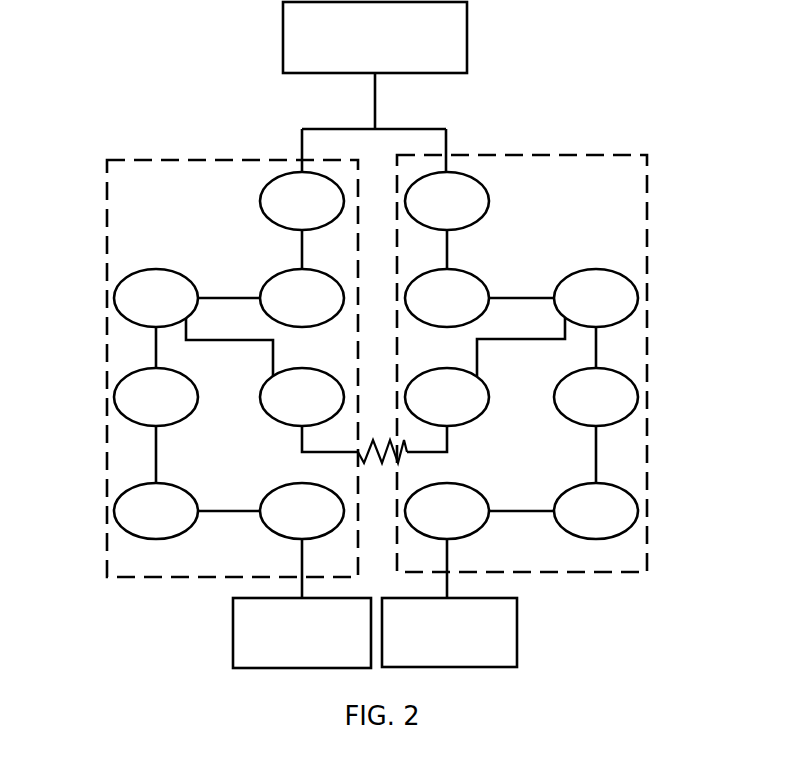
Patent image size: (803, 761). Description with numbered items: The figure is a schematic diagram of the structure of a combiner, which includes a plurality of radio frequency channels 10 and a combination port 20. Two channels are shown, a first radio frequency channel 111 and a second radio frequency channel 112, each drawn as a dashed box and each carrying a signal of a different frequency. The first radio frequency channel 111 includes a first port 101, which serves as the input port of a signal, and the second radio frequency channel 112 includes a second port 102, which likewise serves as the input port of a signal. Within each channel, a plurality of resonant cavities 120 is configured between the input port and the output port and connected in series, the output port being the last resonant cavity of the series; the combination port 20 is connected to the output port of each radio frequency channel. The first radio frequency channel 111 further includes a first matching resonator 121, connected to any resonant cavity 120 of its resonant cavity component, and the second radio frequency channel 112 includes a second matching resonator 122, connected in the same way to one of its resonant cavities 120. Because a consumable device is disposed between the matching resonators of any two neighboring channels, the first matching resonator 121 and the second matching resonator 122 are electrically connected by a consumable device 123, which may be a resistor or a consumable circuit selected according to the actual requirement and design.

The radio frequency channels 10 is at (379, 340).
The combination port 20 is at (375, 37).
The first port 101 is at (302, 633).
The second port 102 is at (449, 632).
The first radio frequency channel 111 is at (232, 160).
The second radio frequency channel 112 is at (522, 155).
The resonant cavities 120 is at (125, 377).
The first matching resonator 121 is at (275, 412).
The second matching resonator 122 is at (470, 413).
The consumable device 123 is at (405, 457).